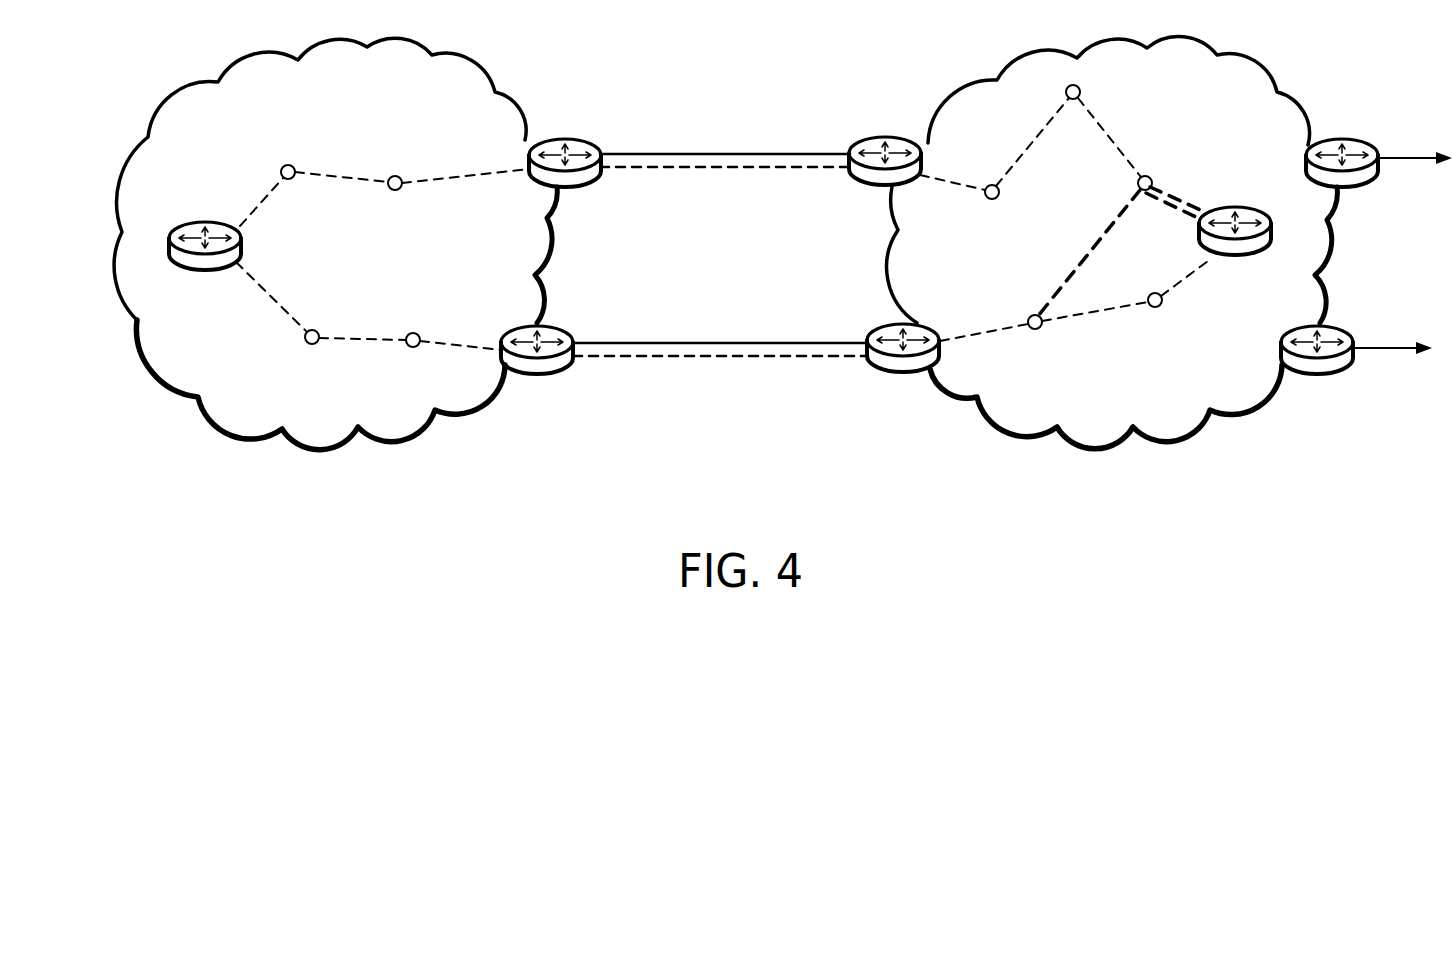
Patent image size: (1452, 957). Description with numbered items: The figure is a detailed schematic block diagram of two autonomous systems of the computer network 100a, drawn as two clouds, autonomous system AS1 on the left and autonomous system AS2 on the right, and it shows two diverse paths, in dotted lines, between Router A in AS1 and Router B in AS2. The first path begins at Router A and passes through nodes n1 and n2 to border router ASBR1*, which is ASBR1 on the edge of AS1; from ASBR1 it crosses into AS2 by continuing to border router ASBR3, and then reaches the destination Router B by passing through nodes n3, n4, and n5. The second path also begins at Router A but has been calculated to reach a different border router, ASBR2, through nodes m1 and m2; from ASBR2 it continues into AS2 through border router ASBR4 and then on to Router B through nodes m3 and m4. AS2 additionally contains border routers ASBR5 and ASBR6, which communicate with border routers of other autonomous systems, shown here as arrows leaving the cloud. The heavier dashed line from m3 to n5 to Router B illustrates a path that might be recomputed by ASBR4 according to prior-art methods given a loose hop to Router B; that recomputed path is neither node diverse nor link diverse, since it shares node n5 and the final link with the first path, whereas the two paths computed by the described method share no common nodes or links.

The computer network 100a is at (345, 497).
The autonomous system AS1 is at (335, 244).
The autonomous system AS2 is at (1112, 243).
The Router A is at (195, 226).
The Router B is at (1243, 213).
The border router ASBR1* ASBR1 is at (578, 130).
The border router ASBR2* ASBR2 is at (552, 375).
The border router ASBR3 is at (885, 129).
The border router ASBR4 is at (897, 372).
The border router ASBR5* ASBR5 is at (1358, 130).
The border router ASBR6* ASBR6 is at (1325, 373).
The node n1 is at (278, 152).
The node n2 is at (397, 166).
The node n3 is at (995, 207).
The node n4 is at (1090, 90).
The node n5 is at (1160, 169).
The node m1 is at (290, 347).
The node m2 is at (420, 358).
The node m3 is at (1038, 338).
The node m4 is at (1166, 315).